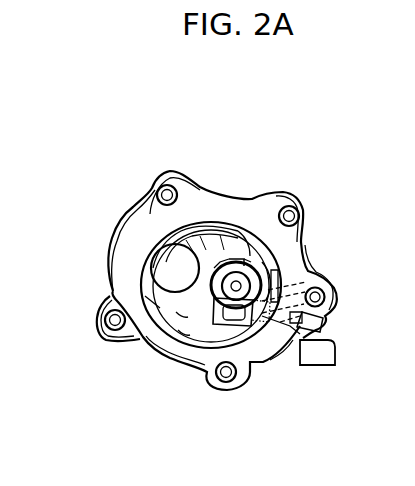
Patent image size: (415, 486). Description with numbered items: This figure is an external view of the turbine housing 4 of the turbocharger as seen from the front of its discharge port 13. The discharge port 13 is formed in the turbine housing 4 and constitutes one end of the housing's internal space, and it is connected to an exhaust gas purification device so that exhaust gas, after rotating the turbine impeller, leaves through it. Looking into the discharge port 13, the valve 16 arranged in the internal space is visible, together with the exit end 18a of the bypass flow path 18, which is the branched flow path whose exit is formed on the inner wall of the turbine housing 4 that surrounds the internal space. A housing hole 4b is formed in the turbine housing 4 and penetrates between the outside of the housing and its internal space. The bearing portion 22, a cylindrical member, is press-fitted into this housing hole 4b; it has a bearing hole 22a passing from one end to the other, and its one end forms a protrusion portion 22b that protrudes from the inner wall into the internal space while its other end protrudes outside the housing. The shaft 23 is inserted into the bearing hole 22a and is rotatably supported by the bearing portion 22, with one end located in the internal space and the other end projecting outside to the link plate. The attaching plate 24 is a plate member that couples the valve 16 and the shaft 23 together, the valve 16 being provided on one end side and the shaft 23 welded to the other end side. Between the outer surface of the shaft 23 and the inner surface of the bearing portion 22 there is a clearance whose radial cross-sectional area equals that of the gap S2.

The turbine housing 4 is at (174, 129).
The housing hole 4b is at (302, 328).
The discharge port 13 is at (182, 333).
The valve 16 is at (200, 272).
The bypass flow path 18 is at (264, 203).
The exit end 18a is at (259, 258).
The bearing portion 22 is at (318, 221).
The bearing hole 22a is at (280, 318).
The protrusion portion 22b is at (274, 284).
The shaft 23 is at (243, 326).
The attaching plate 24 is at (157, 297).
The gap S2 is at (183, 310).